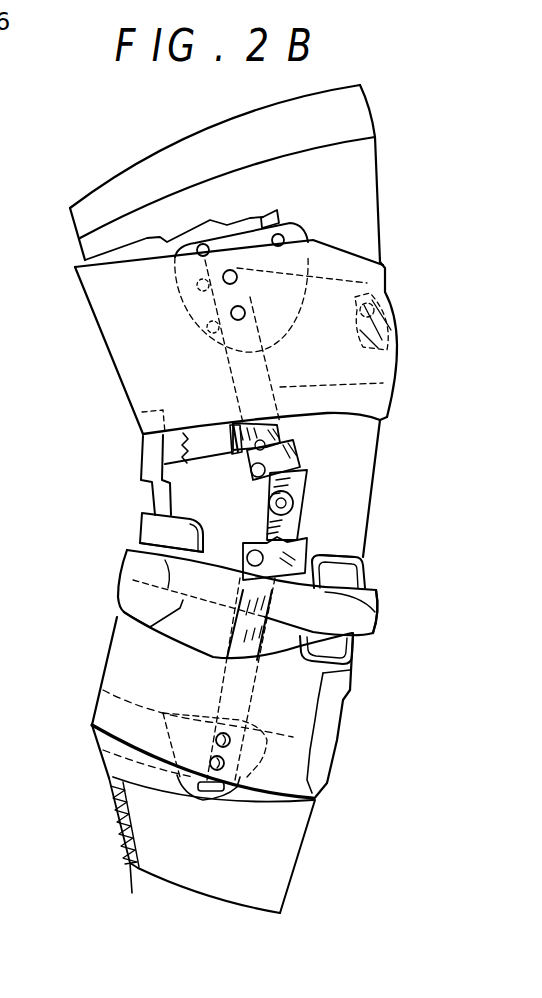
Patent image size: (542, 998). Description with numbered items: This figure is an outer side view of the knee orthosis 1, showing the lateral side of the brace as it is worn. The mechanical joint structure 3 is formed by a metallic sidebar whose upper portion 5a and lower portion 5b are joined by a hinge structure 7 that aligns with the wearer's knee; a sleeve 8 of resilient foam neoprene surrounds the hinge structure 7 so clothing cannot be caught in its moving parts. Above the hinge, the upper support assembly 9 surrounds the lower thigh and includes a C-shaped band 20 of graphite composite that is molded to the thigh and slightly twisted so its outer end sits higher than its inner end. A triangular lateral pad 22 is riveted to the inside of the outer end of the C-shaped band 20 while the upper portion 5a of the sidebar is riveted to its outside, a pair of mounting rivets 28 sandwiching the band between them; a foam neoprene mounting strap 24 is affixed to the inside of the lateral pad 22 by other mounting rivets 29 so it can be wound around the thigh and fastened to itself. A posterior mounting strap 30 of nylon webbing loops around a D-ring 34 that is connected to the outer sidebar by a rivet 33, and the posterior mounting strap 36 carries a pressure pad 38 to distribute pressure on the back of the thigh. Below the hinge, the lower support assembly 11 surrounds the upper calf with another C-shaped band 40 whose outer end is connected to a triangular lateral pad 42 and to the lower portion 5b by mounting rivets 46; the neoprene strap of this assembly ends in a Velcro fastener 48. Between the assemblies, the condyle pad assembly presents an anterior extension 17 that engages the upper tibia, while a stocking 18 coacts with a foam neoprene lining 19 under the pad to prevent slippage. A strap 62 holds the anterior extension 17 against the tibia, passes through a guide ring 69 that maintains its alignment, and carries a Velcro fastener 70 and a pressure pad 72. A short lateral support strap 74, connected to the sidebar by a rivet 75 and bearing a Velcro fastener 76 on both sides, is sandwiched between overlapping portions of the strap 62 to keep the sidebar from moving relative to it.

The knee orthosis 1 is at (396, 146).
The mechanical joint structure 3 is at (310, 494).
The upper portion of sidebar 5a is at (280, 420).
The lower portion of sidebar 5b is at (300, 530).
The hinge structure 7 is at (267, 503).
The sleeve 8 is at (293, 453).
The upper support assembly 9 is at (142, 321).
The lower support assembly 11 is at (167, 686).
The anterior extension 17 is at (347, 575).
The stocking 18 is at (249, 205).
The foam neoprene lining 19 is at (363, 553).
The C-shaped band 20 is at (365, 357).
The triangular lateral pad 22 is at (250, 242).
The foam neoprene mounting strap 24 is at (103, 302).
The mounting rivets 28 is at (240, 278).
The mounting rivets 29 is at (294, 236).
The posterior mounting strap 30 is at (203, 447).
The rivet 33 is at (240, 423).
The D-ring 34 is at (227, 457).
The posterior mounting strap 36 is at (184, 432).
The pressure pad 38 is at (140, 477).
The C-shaped band 40 is at (90, 712).
The triangular lateral pad 42 is at (207, 800).
The mounting rivets 46 is at (210, 763).
The Velcro fastener 48 is at (348, 730).
The strap 62 is at (379, 634).
The guide ring 69 is at (374, 600).
The Velcro fastener 70 is at (140, 563).
The pressure pad 72 is at (142, 535).
The lateral support strap 74 is at (140, 540).
The rivet 75 is at (253, 686).
The Velcro fastener 76 is at (220, 612).